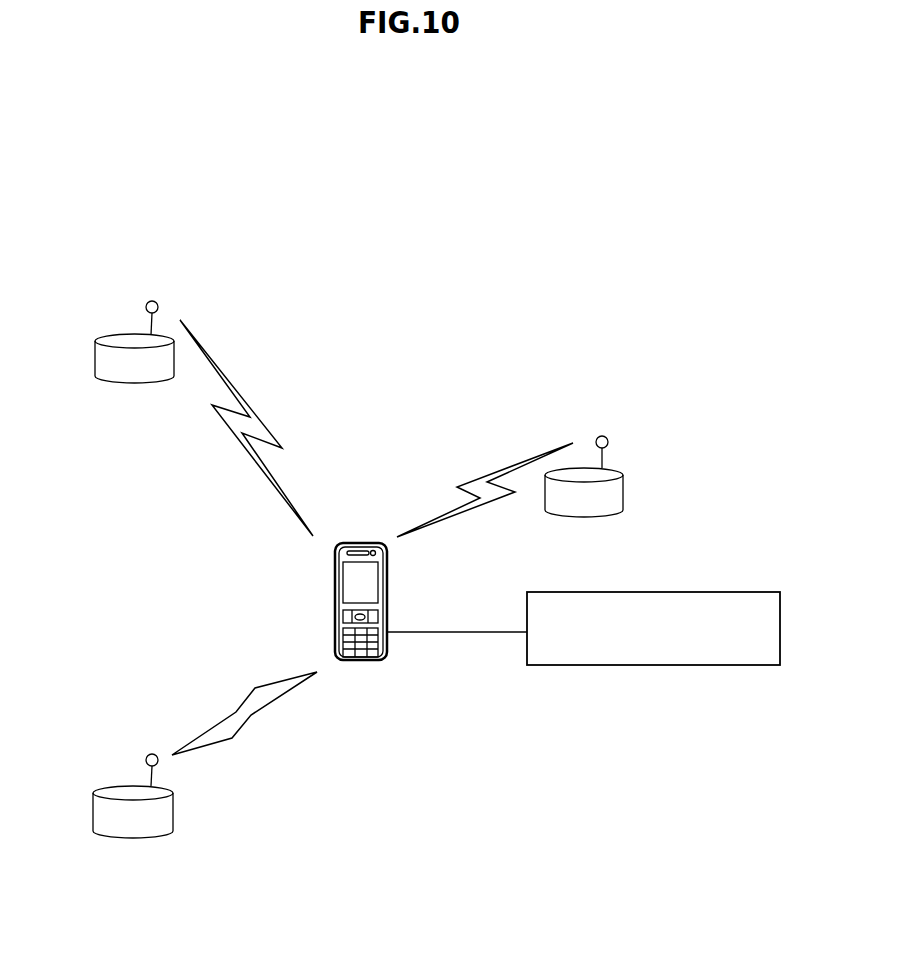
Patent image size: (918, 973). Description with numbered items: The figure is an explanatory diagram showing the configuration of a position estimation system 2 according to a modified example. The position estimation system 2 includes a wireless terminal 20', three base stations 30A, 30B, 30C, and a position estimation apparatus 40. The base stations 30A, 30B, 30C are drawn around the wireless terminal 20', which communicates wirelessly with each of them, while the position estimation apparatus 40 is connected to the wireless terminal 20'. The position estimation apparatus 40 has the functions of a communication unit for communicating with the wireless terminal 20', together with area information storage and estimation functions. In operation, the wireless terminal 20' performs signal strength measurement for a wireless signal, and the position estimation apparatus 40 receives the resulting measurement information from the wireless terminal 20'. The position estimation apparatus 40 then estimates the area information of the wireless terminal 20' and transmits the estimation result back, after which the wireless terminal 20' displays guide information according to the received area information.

The position estimation system 2 is at (434, 812).
The wireless terminal 20' is at (327, 601).
The base station 30A is at (123, 787).
The base station 30B is at (123, 334).
The base station 30C is at (624, 486).
The position estimation apparatus 40 is at (693, 592).